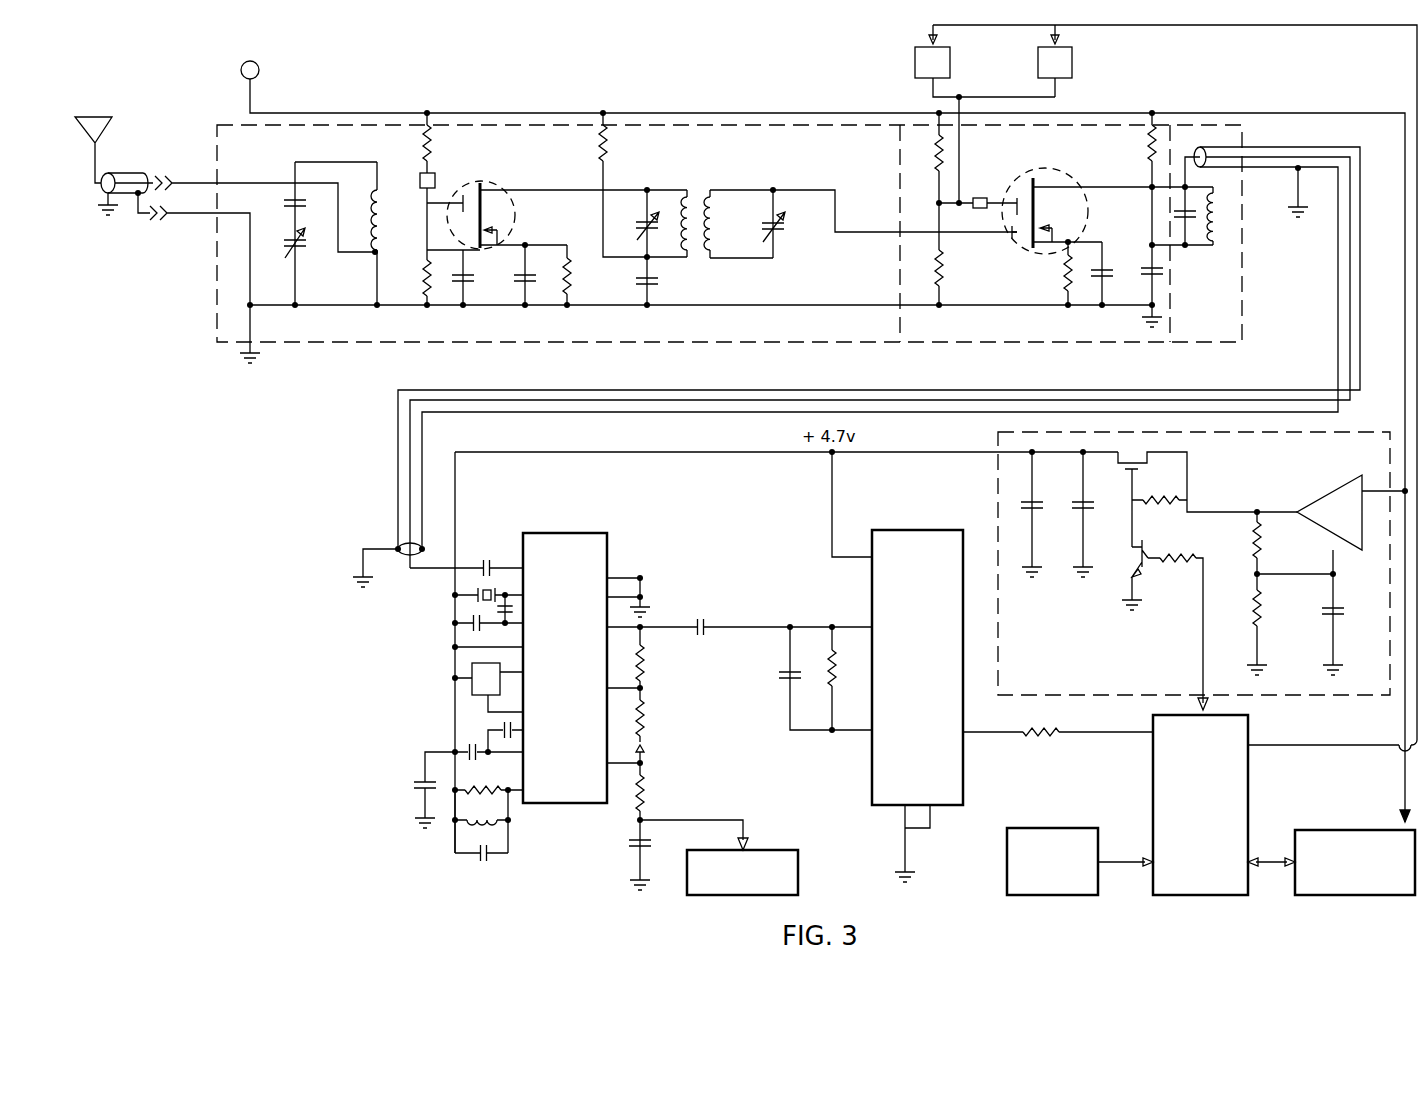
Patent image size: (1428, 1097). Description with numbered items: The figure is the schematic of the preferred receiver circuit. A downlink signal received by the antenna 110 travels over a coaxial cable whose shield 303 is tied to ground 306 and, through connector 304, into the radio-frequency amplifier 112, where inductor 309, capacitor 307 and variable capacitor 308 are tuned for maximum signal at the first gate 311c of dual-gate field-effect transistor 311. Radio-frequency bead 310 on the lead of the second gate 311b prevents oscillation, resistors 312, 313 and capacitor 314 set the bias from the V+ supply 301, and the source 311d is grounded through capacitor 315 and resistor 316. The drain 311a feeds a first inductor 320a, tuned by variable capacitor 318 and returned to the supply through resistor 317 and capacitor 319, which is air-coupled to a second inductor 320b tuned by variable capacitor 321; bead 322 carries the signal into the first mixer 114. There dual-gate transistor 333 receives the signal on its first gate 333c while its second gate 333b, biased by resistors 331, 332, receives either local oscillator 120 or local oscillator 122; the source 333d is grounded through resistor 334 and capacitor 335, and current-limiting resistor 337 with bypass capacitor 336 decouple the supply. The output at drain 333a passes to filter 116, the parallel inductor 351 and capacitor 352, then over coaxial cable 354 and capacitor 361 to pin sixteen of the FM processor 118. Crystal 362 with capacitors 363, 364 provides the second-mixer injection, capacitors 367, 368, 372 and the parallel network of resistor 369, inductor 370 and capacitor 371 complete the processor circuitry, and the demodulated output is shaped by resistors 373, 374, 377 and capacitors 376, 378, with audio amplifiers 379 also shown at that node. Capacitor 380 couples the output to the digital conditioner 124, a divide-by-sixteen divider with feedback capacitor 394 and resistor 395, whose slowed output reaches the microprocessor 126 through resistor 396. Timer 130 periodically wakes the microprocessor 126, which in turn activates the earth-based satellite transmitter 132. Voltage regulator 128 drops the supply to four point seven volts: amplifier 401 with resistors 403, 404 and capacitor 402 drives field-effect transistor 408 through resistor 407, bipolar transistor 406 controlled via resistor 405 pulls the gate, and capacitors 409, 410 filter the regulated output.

The antenna 110 is at (112, 125).
The radio-frequency amplifier 112 is at (703, 120).
The first mixer 114 is at (1075, 122).
The filter 116 is at (1193, 122).
The FM processor 118 is at (560, 533).
The local oscillator 120 is at (1072, 64).
The local oscillator 122 is at (950, 68).
The digital conditioner 124 is at (963, 772).
The microprocessor 126 is at (1165, 775).
The voltage regulator 128 is at (992, 481).
The timer 130 is at (1043, 890).
The transmitter 132 is at (1367, 828).
The V+ supply 301 is at (259, 70).
The shield of the coaxial cable 303 is at (118, 170).
The connector 304 is at (152, 222).
The ground 306 is at (260, 353).
The capacitor 307 is at (282, 200).
The variable capacitor 308 is at (300, 256).
The inductor 309 is at (367, 280).
The radio-frequency bead 310 is at (419, 174).
The dual-gate field-effect transistor 311 is at (519, 200).
The drain 311a is at (516, 205).
The second gate 311b is at (470, 186).
The first gate 311c is at (460, 230).
The source 311d is at (500, 235).
The resistor 312 is at (433, 152).
The resistor 313 is at (424, 306).
The capacitor 314 is at (466, 285).
The capacitor 315 is at (528, 285).
The resistor 316 is at (578, 285).
The resistor 317 is at (612, 150).
The variable capacitor 318 is at (653, 205).
The capacitor 319 is at (650, 285).
The first inductor 320a is at (690, 265).
The second inductor 320b is at (713, 262).
The variable capacitor 321 is at (778, 212).
The radio-frequency bead 322 is at (987, 178).
The resistor 331 is at (936, 150).
The resistor 332 is at (946, 272).
The dual-gate field-effect transistor 333 is at (1081, 204).
The drain 333a is at (1090, 198).
The second gate 333b is at (1018, 190).
The second gate 333c is at (1002, 240).
The source 333d is at (1050, 236).
The resistor 334 is at (1060, 280).
The capacitor 335 is at (1106, 278).
The bypass capacitor 336 is at (1148, 246).
The current-limiting resistor 337 is at (1144, 145).
The inductor 351 is at (1220, 225).
The capacitor 352 is at (1190, 205).
The coaxial cable 354 is at (1290, 148).
The capacitor 361 is at (494, 543).
The crystal 362 is at (462, 595).
The capacitor 363 is at (498, 611).
The capacitor 364 is at (470, 624).
The capacitor 367 is at (500, 728).
The capacitor 368 is at (466, 751).
The resistor 369 is at (495, 795).
The inductor 370 is at (490, 825).
The capacitor 371 is at (490, 860).
The capacitor 372 is at (416, 795).
The resistor 373 is at (646, 670).
The resistor 374 is at (646, 717).
The capacitor 376 is at (648, 742).
The resistor 377 is at (646, 788).
The capacitor 378 is at (644, 838).
The audio amplifiers 379 is at (760, 850).
The capacitor 380 is at (705, 620).
The capacitor 394 is at (782, 678).
The resistor 395 is at (828, 680).
The resistor 396 is at (1053, 738).
The amplifier 401 is at (1340, 490).
The capacitor 402 is at (1340, 600).
The resistor 403 is at (1263, 605).
The resistor 404 is at (1263, 545).
The resistor 405 is at (1183, 555).
The bipolar junction transistor 406 is at (1148, 540).
The resistor 407 is at (1176, 483).
The field-effect transistor 408 is at (1140, 458).
The capacitor 409 is at (1087, 518).
The capacitor 410 is at (1036, 518).